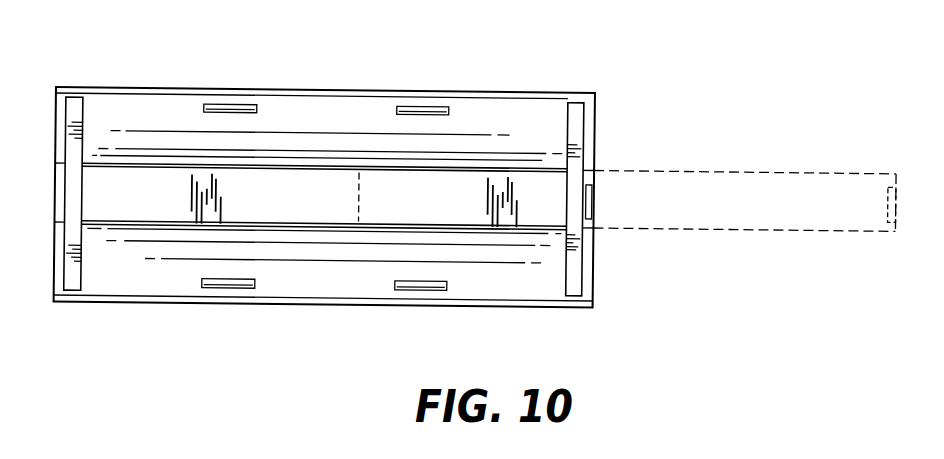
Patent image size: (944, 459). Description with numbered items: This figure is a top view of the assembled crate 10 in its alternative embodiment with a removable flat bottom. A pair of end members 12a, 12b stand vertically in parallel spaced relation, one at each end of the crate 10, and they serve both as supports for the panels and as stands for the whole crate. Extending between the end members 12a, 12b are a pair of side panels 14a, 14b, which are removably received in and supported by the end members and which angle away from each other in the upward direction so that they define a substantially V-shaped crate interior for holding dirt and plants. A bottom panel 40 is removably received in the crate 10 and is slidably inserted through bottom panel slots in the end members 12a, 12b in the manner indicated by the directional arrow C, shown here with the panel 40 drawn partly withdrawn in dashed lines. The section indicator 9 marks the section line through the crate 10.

The crate apparatus 10 is at (124, 362).
The end member 12a is at (77, 113).
The end member 12b is at (576, 124).
The side panel 14a is at (290, 271).
The side panel 14b is at (173, 113).
The bottom panel 40 is at (156, 207).
The section line 9- 9 is at (335, 140).
The directional arrow C is at (872, 153).